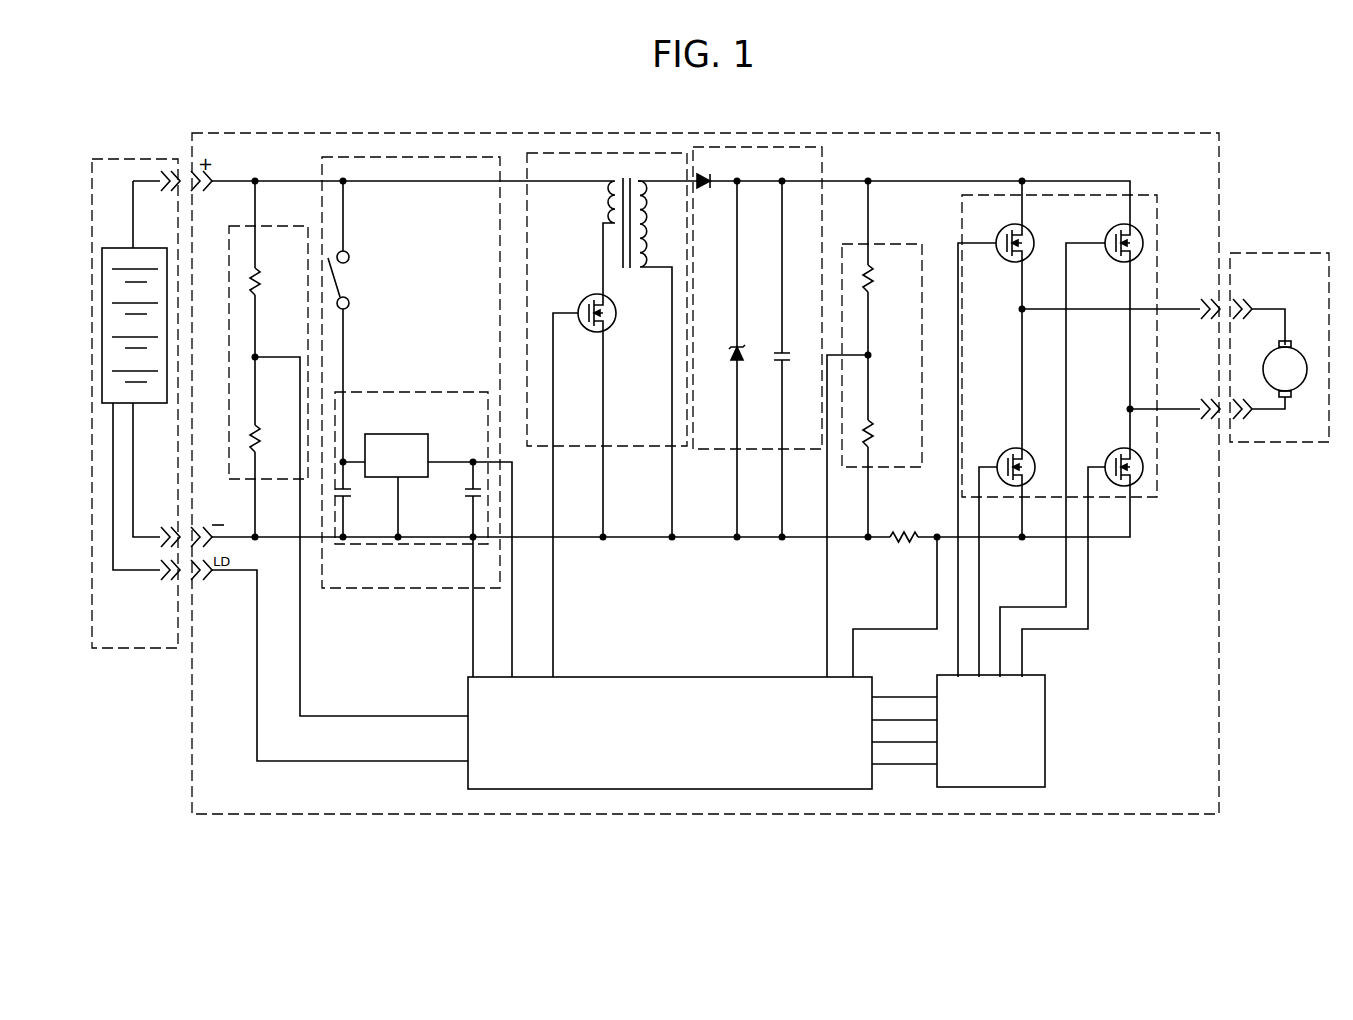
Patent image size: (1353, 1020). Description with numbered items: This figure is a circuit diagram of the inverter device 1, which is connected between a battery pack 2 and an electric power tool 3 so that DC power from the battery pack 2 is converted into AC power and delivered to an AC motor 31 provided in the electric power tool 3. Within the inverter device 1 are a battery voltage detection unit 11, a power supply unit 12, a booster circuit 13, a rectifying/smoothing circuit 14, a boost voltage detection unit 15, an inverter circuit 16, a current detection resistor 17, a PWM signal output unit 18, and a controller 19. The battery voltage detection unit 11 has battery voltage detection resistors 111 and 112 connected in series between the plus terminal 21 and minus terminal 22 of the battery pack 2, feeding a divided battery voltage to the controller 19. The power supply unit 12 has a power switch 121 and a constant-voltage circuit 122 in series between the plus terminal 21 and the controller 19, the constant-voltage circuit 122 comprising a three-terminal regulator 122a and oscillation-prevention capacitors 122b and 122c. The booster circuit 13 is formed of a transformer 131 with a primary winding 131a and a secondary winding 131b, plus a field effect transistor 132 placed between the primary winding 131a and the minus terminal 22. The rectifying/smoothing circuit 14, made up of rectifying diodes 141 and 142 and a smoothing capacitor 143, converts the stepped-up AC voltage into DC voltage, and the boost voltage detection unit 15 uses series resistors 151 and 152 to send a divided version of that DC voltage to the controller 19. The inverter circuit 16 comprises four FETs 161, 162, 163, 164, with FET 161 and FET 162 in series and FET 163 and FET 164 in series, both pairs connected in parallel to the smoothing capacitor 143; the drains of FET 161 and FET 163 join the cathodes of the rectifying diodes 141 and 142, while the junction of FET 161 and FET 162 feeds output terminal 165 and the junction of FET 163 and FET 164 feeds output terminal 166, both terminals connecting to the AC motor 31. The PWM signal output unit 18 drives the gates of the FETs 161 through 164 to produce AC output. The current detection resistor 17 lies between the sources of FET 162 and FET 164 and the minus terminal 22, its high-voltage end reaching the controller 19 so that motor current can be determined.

The inverter device 1 is at (1152, 130).
The battery pack 2 is at (133, 155).
The plus terminal 21 is at (150, 187).
The minus terminal 22 is at (145, 530).
The electric power tool 3 is at (1279, 335).
The AC motor 31 is at (1296, 392).
The battery voltage detection unit 11 is at (344, 448).
The battery voltage detection resistor 111 is at (266, 275).
The battery voltage detection resistor 112 is at (266, 432).
The power supply unit 12 is at (390, 413).
The power switch 121 is at (348, 272).
The constant-voltage circuit 122 is at (423, 516).
The three-terminal regulator 122a is at (392, 430).
The oscillation-prevention capacitor 122b is at (351, 494).
The oscillation-prevention capacitor 122c is at (467, 492).
The booster circuit 13 is at (594, 407).
The transformer 131 is at (623, 339).
The primary winding 131a is at (581, 207).
The secondary winding 131b is at (660, 205).
The field effect transistor 132 is at (617, 340).
The rectifying/smoothing circuit 14 is at (779, 341).
The rectifying diode 141 is at (706, 167).
The rectifying diode 142 is at (742, 347).
The smoothing capacitor 143 is at (786, 348).
The boost voltage detection unit 15 is at (886, 429).
The resistor 151 is at (878, 282).
The resistor 152 is at (878, 438).
The inverter circuit 16 is at (1121, 425).
The FET 161 is at (1032, 234).
The FET 162 is at (1026, 452).
The FET 163 is at (1138, 234).
The FET 164 is at (1139, 455).
The output terminal 165 is at (1203, 296).
The output terminal 166 is at (1203, 396).
The current detection resistor 17 is at (909, 525).
The PWM signal output unit 18 is at (1048, 717).
The controller 19 is at (459, 681).